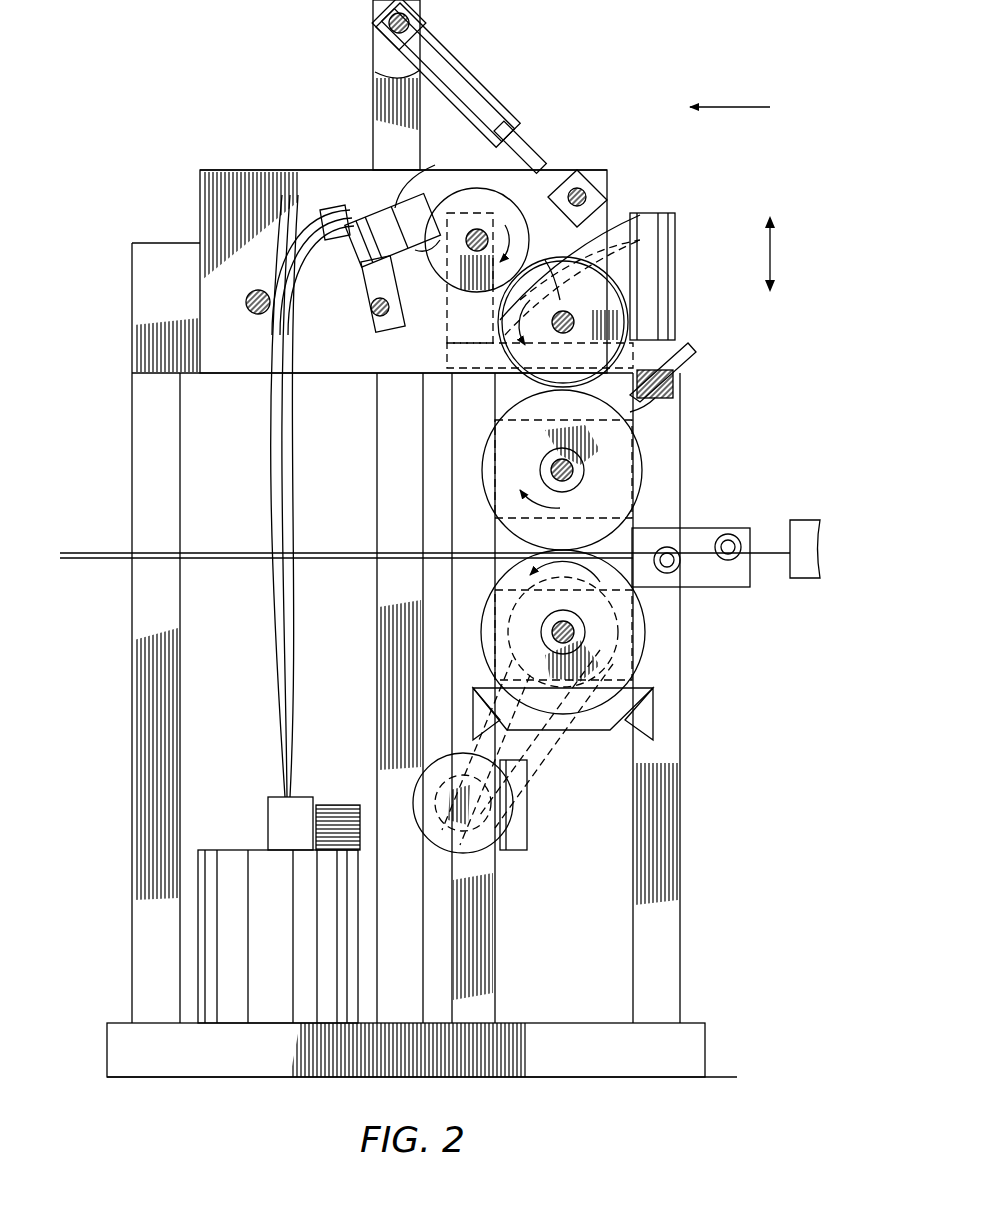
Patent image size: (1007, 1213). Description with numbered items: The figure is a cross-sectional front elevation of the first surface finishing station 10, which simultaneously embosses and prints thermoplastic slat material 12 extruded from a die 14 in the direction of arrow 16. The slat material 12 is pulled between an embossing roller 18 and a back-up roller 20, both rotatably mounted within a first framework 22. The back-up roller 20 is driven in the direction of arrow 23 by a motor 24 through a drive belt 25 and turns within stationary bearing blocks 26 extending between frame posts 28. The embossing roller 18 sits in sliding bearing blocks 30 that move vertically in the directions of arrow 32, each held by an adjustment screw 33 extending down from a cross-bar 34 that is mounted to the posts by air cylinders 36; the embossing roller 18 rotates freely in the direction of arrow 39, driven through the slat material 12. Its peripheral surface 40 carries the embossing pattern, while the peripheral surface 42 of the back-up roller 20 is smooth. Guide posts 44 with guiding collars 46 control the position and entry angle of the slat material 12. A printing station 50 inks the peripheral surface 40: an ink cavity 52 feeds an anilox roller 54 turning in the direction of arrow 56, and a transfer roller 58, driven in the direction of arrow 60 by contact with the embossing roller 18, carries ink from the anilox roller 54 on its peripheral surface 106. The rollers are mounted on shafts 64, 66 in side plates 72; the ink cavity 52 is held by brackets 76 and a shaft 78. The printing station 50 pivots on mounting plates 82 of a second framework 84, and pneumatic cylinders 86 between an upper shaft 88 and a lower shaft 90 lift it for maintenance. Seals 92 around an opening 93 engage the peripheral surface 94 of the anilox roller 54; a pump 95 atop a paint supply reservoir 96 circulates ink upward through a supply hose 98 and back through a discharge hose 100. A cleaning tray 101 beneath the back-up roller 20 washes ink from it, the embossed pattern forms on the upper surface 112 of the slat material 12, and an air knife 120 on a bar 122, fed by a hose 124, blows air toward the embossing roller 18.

The first surface finishing station 10 is at (712, 842).
The thermoplastic slat material 12 is at (665, 528).
The die 14 is at (808, 520).
The arrow 16 is at (733, 107).
The embossing roller 18 is at (642, 482).
The back-up roller 20 is at (650, 640).
The first framework 22 is at (684, 928).
The arrow 23 is at (470, 612).
The motor 24 is at (470, 858).
The drive belt 25 is at (548, 755).
The stationary bearing blocks 26 is at (640, 700).
The frame posts 28 is at (497, 955).
The sliding bearing blocks 30 is at (495, 428).
The arrow 32 is at (772, 262).
The adjustment screw 33 is at (635, 215).
The cross-bar 34 is at (640, 258).
The air cylinders 36 is at (678, 313).
The arrow 39 is at (512, 492).
The peripheral surface 40 is at (520, 450).
The peripheral surface 42 is at (650, 612).
The guide posts 44 is at (740, 535).
The guiding collars 46 is at (690, 588).
The printing station 50 is at (182, 198).
The ink cavity 52 is at (395, 202).
The anilox roller 54 is at (480, 228).
The arrow 56 is at (560, 250).
The transfer roller 58 is at (658, 225).
The arrow 60 is at (470, 320).
The shaft 64 is at (640, 200).
The shaft 66 is at (545, 200).
The side plates 72 is at (273, 170).
The brackets 76 is at (370, 263).
The shaft 78 is at (378, 318).
The mounting plates 82 is at (246, 302).
The second framework 84 is at (130, 742).
The pneumatic cylinders 86 is at (398, 75).
The upper shaft 88 is at (380, 33).
The lower shaft 90 is at (600, 300).
The seals 92 is at (408, 150).
The opening 93 is at (440, 95).
The peripheral surface 94 is at (565, 195).
The pump 95 is at (305, 797).
The paint supply reservoir 96 is at (238, 850).
The supply hose 98 is at (272, 437).
The discharge hose 100 is at (275, 672).
The cleaning tray 101 is at (640, 738).
The peripheral surface 106 is at (630, 285).
The upper surface 112 is at (432, 545).
The air knife 120 is at (680, 400).
The bar 122 is at (700, 345).
The hose 124 is at (690, 368).